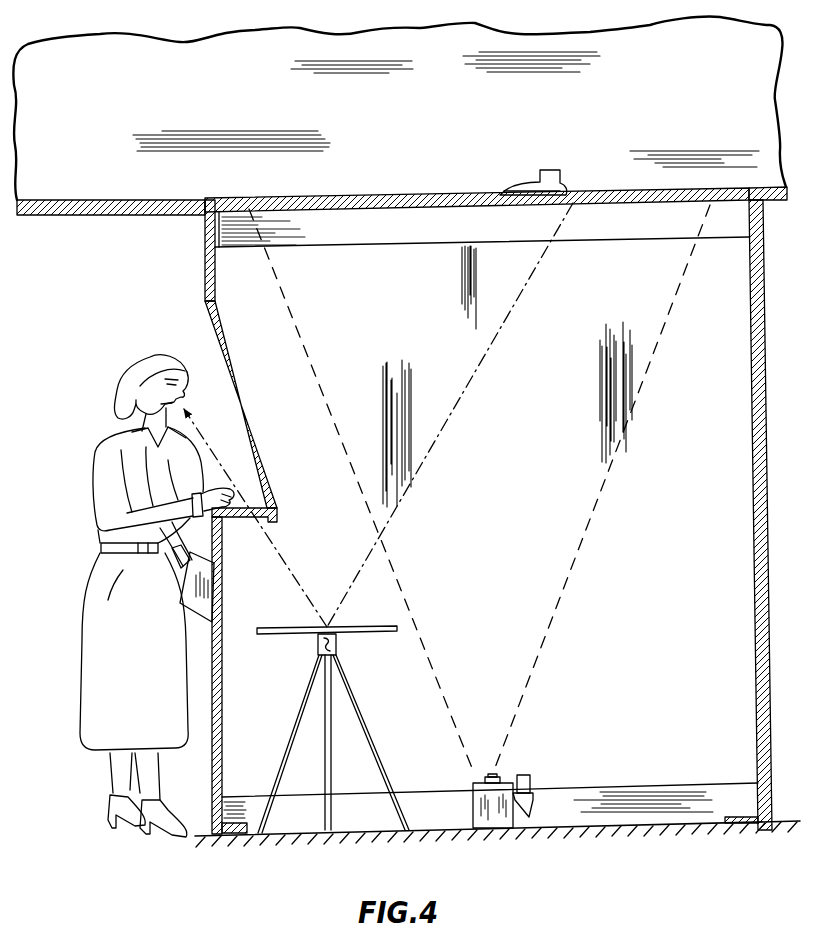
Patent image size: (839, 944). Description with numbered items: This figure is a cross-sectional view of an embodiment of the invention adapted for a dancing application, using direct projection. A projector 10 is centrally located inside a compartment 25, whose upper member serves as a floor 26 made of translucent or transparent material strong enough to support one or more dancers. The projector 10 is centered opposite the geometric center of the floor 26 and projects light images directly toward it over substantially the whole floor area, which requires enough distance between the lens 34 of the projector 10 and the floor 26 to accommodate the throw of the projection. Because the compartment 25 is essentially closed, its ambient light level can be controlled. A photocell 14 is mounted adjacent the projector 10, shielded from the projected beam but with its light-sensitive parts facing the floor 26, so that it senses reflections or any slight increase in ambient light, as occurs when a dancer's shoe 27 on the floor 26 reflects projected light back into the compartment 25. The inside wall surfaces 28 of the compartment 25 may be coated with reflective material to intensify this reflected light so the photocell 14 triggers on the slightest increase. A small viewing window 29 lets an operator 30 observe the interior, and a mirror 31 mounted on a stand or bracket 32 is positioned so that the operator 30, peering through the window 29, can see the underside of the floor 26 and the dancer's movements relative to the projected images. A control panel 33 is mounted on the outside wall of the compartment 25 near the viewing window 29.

The projector 10 is at (477, 797).
The photocell 14 is at (606, 776).
The compartment 25 is at (219, 779).
The floor 26 is at (602, 197).
The dancer's shoe 27 is at (558, 182).
The inside wall surfaces 28 is at (245, 411).
The viewing window 29 is at (259, 506).
The operator 30 is at (93, 443).
The mirror 31 is at (355, 628).
The stand or bracket 32 is at (338, 645).
The control panel 33 is at (193, 618).
The lens 34 is at (494, 775).